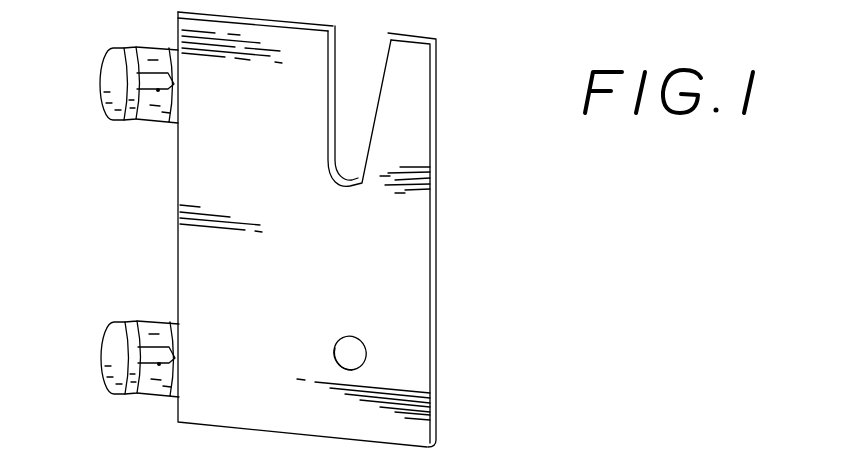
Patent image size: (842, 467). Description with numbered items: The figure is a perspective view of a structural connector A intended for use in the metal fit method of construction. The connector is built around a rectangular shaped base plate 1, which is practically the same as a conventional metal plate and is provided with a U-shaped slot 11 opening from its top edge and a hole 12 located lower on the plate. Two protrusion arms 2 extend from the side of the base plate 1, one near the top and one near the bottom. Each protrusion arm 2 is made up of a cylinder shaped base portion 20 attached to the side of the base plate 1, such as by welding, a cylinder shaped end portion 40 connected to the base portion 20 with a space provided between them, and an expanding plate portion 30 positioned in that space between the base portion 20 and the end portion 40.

The base plate 1 is at (407, 232).
The U-shaped slot 11 is at (357, 132).
The hole 12 is at (357, 350).
The structural connector A is at (437, 295).
The protrusion arm 2 is at (107, 198).
The end portion 40 is at (102, 103).
The expanding plate portion 30 is at (133, 122).
The base portion 20 is at (158, 127).